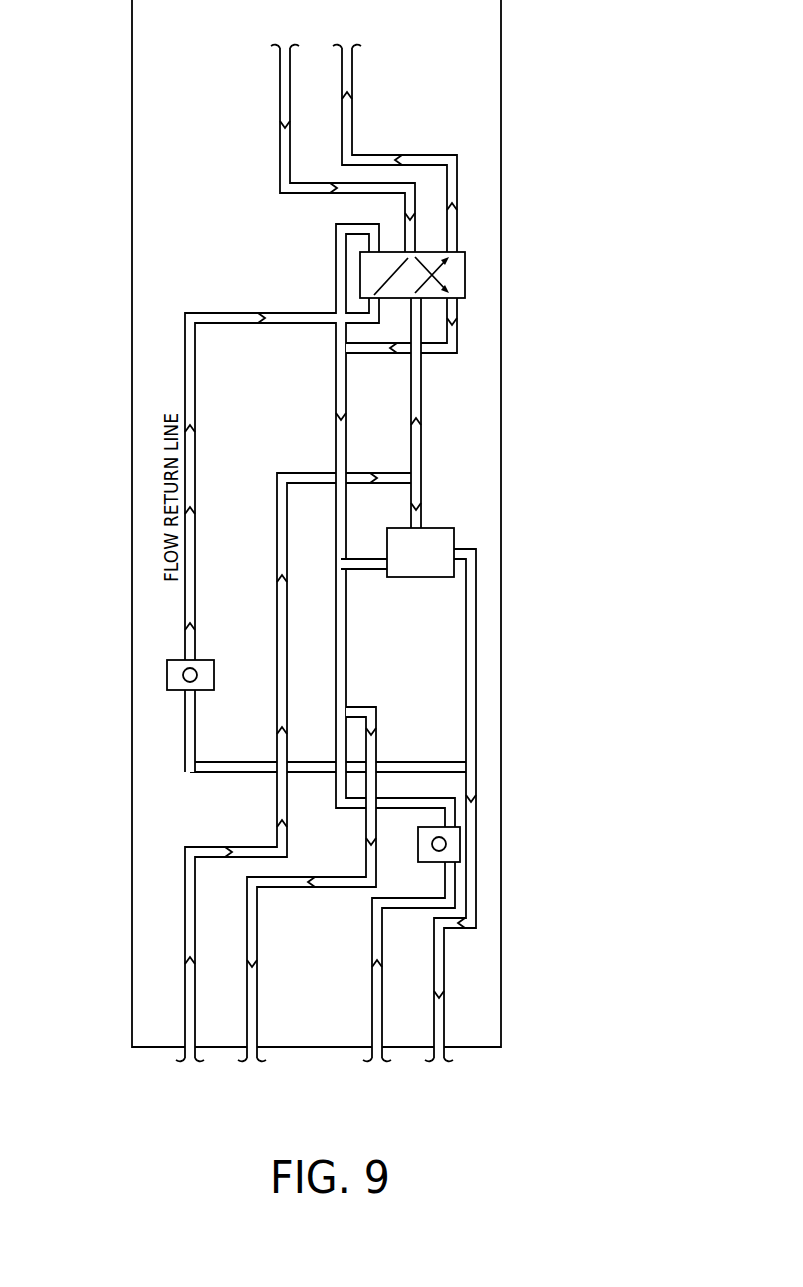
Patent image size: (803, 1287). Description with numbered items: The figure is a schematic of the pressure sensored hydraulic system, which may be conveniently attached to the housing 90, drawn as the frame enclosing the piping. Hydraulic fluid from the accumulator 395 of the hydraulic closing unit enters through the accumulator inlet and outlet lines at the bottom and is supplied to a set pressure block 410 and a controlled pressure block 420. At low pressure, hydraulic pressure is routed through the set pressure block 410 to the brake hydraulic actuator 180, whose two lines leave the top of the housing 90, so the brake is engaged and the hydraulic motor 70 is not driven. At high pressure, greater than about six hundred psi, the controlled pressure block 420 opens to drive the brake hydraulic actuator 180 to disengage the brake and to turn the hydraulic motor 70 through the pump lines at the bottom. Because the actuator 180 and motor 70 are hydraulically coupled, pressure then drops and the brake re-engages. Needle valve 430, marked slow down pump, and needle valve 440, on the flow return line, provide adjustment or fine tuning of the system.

The housing 90 is at (501, 168).
The brake hydraulic actuator 180 is at (361, 137).
The set pressure block 410 is at (474, 274).
The controlled pressure block 420 is at (468, 537).
The needle valve 430 is at (468, 851).
The needle valve 440 is at (160, 672).
The accumulator 395 is at (242, 1091).
The hydraulic motor 70 is at (421, 1091).